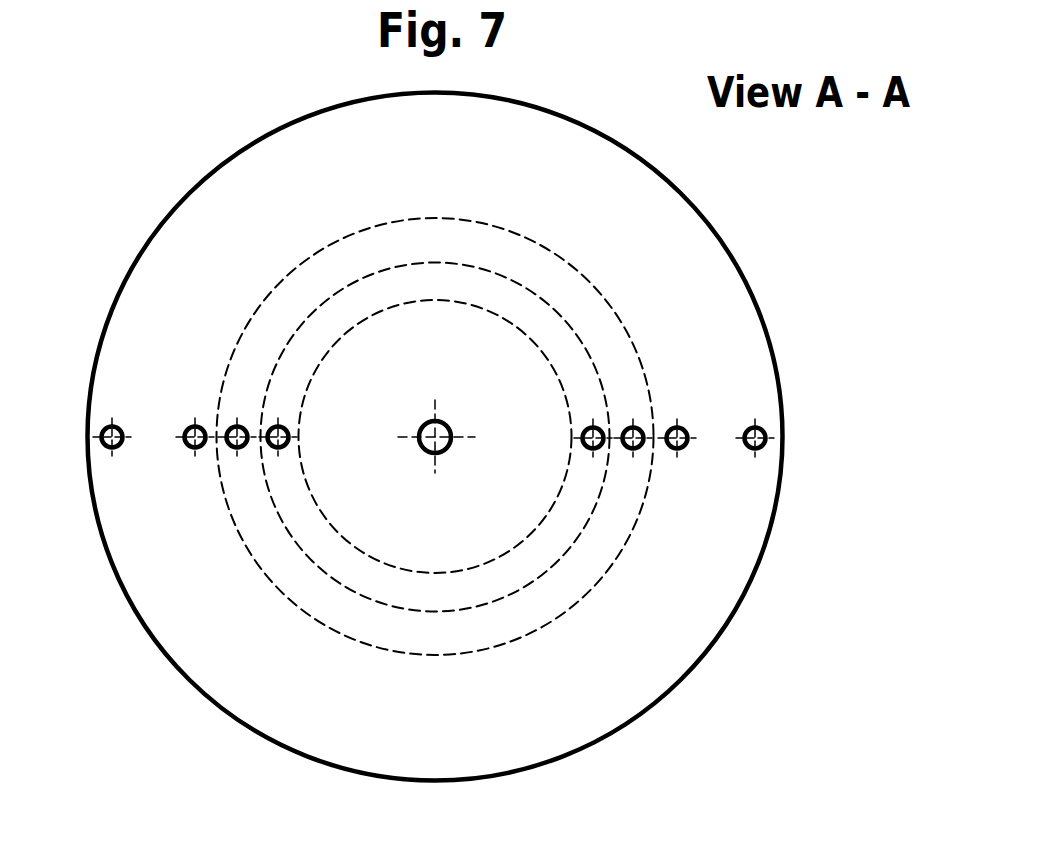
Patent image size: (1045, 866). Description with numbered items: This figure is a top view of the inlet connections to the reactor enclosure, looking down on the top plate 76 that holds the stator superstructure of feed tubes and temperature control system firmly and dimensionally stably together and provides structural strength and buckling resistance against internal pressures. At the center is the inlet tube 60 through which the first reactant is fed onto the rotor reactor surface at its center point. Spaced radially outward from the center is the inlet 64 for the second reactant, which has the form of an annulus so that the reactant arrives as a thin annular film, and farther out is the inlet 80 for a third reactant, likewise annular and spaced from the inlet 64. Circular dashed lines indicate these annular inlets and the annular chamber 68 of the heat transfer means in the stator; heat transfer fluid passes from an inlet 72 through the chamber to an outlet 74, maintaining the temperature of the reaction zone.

The inlet tube 60 is at (437, 432).
The inlet 64 is at (282, 443).
The annular chamber 68 is at (754, 294).
The inlet 72 is at (191, 447).
The outlet 74 is at (108, 427).
The top plate 76 is at (662, 628).
The inlet 80 is at (232, 425).